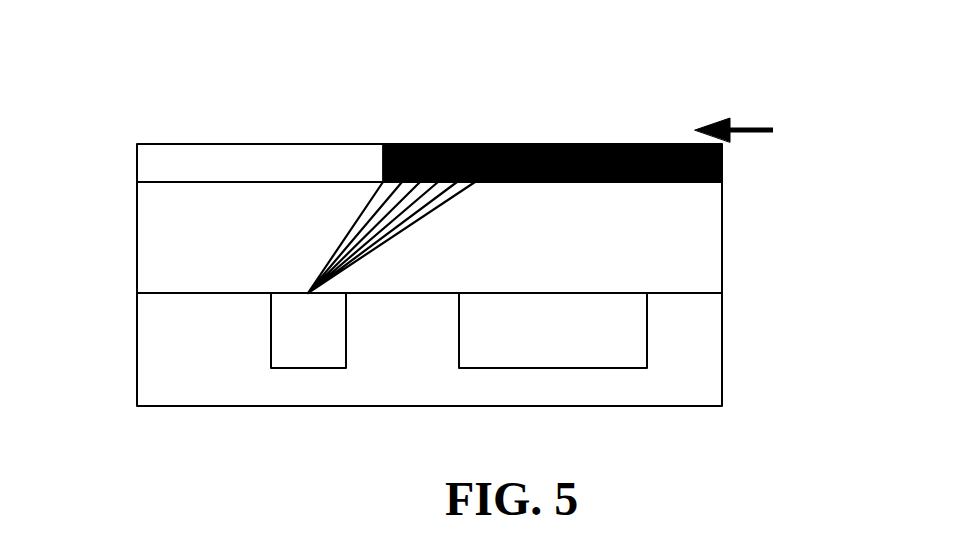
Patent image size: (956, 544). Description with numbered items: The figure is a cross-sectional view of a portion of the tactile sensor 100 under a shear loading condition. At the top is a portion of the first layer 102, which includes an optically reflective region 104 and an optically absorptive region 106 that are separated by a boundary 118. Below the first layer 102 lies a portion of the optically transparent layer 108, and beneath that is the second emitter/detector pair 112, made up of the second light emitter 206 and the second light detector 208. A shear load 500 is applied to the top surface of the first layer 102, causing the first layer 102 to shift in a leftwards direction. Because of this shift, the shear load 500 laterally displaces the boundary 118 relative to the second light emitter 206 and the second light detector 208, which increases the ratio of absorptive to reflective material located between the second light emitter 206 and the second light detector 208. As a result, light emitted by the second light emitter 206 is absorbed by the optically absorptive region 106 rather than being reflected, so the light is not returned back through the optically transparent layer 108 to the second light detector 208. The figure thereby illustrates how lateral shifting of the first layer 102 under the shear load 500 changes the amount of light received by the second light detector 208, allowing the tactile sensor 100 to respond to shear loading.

The tactile sensor 100 is at (707, 60).
The first layer 102 is at (137, 162).
The optically reflective region 104 is at (232, 155).
The optically absorptive region 106 is at (517, 143).
The optically transparent layer 108 is at (155, 257).
The second emitter/detector pair 112 is at (708, 362).
The boundary 118 is at (383, 145).
The second light emitter 206 is at (316, 359).
The second light detector 208 is at (569, 359).
The shear load 500 is at (746, 121).